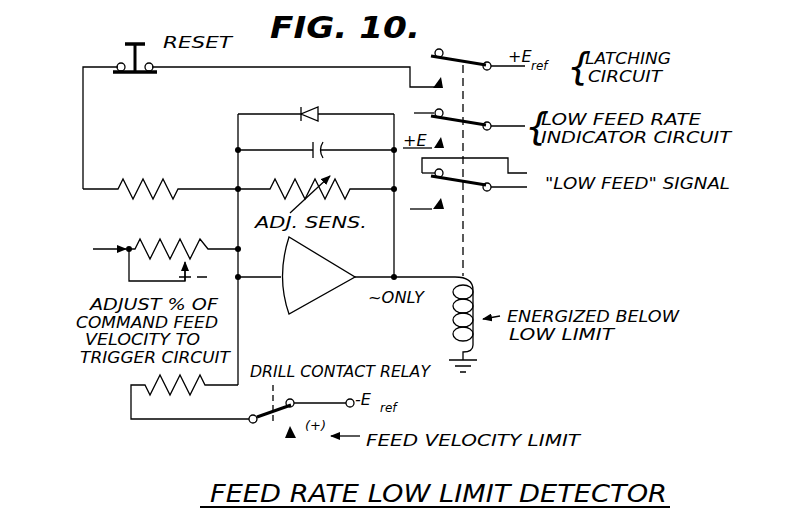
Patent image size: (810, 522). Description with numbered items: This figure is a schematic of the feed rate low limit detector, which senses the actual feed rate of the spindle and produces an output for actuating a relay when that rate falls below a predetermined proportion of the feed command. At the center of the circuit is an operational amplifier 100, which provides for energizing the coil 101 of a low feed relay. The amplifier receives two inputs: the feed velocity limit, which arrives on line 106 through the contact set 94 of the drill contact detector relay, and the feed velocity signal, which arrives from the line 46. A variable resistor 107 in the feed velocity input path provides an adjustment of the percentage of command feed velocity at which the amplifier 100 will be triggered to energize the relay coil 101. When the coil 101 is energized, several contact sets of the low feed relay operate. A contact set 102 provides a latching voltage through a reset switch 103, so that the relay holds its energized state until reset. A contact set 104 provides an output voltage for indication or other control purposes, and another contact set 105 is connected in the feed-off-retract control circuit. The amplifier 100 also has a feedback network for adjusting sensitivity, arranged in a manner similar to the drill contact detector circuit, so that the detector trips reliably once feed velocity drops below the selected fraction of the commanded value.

The reset switch 103 is at (118, 62).
The contact set 102 is at (468, 65).
The contact set 104 is at (467, 120).
The contact set 105 is at (472, 190).
The coil 101 is at (476, 296).
The operational amplifier 100 is at (300, 297).
The variable resistor 107 is at (182, 222).
The line 46 is at (120, 255).
The line 106 is at (155, 421).
The contact set 94 is at (280, 422).